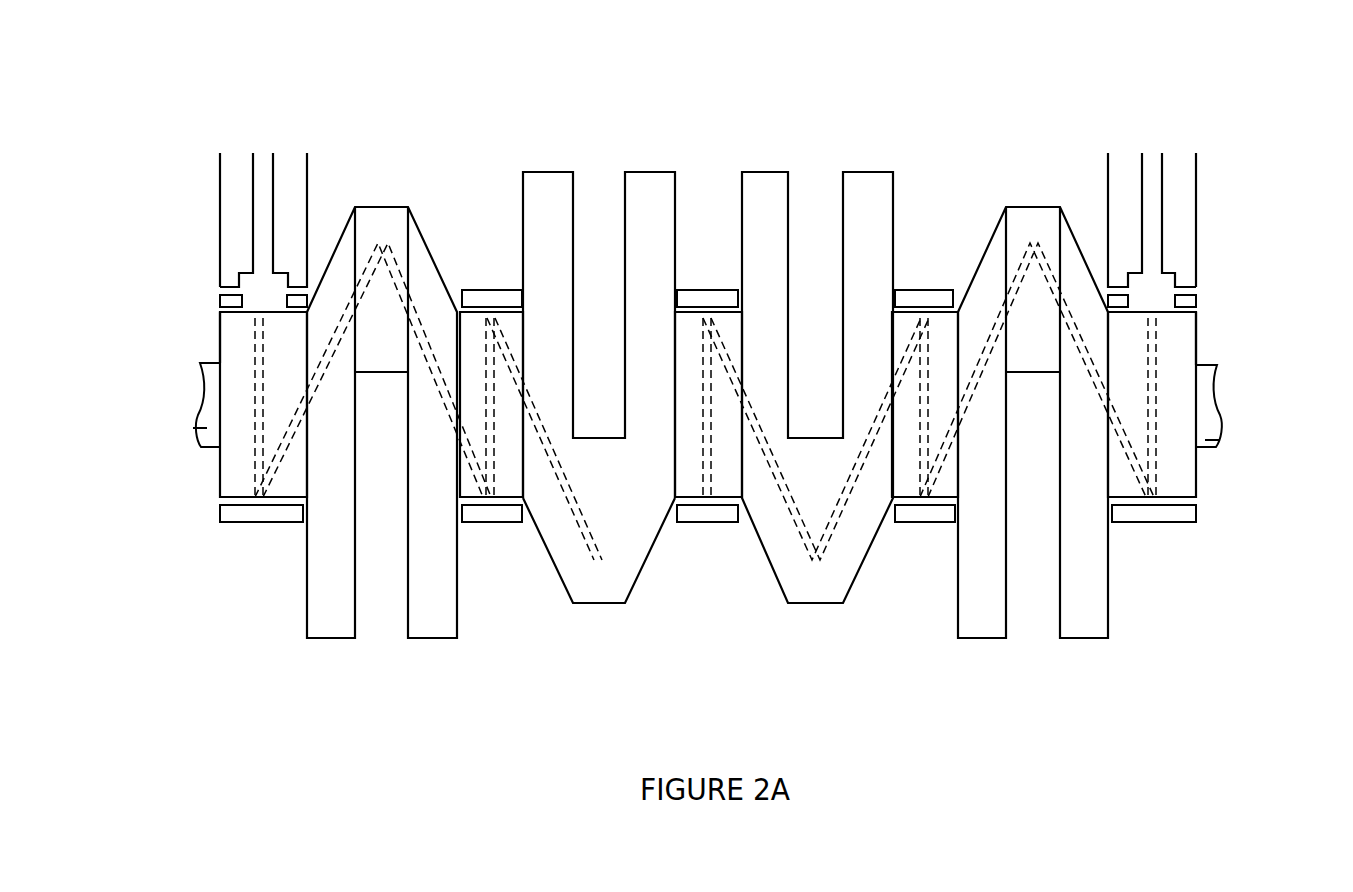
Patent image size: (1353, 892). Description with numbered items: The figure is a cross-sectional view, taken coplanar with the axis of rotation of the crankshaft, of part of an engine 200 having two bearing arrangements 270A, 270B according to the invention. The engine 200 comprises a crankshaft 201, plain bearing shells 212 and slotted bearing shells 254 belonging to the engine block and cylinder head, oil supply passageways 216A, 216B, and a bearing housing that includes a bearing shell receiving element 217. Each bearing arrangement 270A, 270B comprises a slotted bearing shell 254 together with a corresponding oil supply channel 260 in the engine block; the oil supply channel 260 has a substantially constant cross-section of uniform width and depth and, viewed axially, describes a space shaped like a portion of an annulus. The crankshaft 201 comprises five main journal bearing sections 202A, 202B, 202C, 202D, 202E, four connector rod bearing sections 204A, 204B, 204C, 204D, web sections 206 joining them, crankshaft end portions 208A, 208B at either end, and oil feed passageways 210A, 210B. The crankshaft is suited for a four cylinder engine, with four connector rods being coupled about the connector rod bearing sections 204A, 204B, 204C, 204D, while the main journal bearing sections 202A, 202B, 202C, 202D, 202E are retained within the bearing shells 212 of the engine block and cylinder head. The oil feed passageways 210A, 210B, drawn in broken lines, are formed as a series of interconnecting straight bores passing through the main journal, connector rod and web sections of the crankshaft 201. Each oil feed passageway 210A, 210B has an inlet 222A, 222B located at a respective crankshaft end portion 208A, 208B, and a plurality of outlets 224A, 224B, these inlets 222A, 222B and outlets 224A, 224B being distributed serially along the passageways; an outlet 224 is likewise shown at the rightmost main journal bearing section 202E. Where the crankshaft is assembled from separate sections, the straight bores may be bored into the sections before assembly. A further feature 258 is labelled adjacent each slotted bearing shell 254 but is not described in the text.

The engine 200 is at (432, 126).
The crankshaft 201 is at (1242, 395).
The main journal bearing section 202A is at (227, 473).
The main journal bearing section 202B is at (508, 488).
The main journal bearing section 202C is at (708, 404).
The main journal bearing section 202D is at (925, 404).
The main journal bearing section 202E is at (1133, 493).
The connector rod bearing section 204A is at (370, 220).
The connector rod bearing section 204B is at (585, 597).
The connector rod bearing section 204C is at (818, 438).
The connector rod bearing section 204D is at (1032, 240).
The web sections 206 is at (622, 193).
The crankshaft end portion 208A is at (185, 430).
The crankshaft end portion 208B is at (1205, 447).
The oil feed passageway 210A is at (502, 337).
The oil feed passageway 210B is at (722, 337).
The plain bearing shells 212 is at (487, 293).
The oil supply passageway 216A is at (265, 190).
The oil supply passageway 216B is at (1152, 188).
The bearing shell receiving element 217 is at (229, 189).
The inlet 222A is at (220, 338).
The inlet 222B is at (1197, 340).
The outlets 224 is at (483, 335).
The outlets 224A is at (262, 507).
The outlets 224B is at (705, 297).
The slotted bearing shell 254 is at (222, 300).
The pin base 258 is at (262, 302).
The oil supply channel 260 is at (243, 280).
The bearing arrangement 270A is at (188, 260).
The bearing arrangement 270B is at (1239, 260).